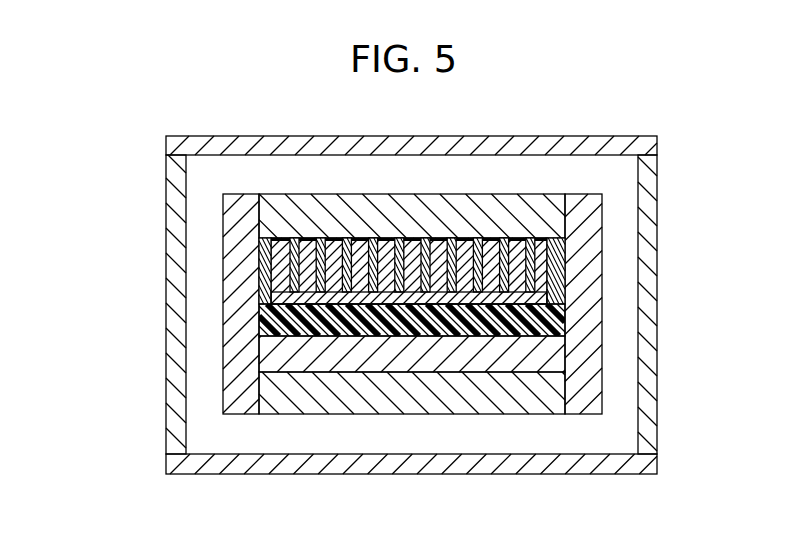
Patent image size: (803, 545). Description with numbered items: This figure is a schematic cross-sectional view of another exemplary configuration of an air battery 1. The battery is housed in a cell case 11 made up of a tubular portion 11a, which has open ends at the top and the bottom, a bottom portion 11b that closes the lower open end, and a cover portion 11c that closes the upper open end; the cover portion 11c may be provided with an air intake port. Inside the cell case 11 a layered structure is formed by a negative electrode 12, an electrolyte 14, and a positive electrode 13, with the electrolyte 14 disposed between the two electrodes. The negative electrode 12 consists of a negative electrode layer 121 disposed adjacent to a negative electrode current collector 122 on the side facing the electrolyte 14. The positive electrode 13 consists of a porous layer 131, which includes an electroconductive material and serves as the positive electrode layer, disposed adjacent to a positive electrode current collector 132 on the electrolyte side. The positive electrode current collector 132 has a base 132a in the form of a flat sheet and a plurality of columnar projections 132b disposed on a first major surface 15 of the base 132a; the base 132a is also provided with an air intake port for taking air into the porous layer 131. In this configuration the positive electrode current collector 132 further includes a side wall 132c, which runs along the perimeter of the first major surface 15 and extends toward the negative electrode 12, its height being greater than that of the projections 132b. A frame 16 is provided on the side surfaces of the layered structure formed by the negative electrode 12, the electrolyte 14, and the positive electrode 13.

The air battery 1 is at (587, 102).
The cell case 11 is at (749, 460).
The tubular portion 11a is at (650, 260).
The bottom portion 11b is at (640, 465).
The cover portion 11c is at (638, 145).
The negative electrode 12 is at (48, 342).
The negative electrode layer 121 is at (267, 350).
The negative electrode current collector 122 is at (267, 390).
The positive electrode 13 is at (51, 222).
The porous layer 131 is at (283, 295).
The positive electrode current collector 132 is at (107, 190).
The base 132a is at (293, 213).
The projections 132b is at (287, 241).
The side wall 132c is at (283, 265).
The electrolyte 14 is at (267, 320).
The first major surface 15 is at (467, 237).
The frame 16 is at (238, 405).